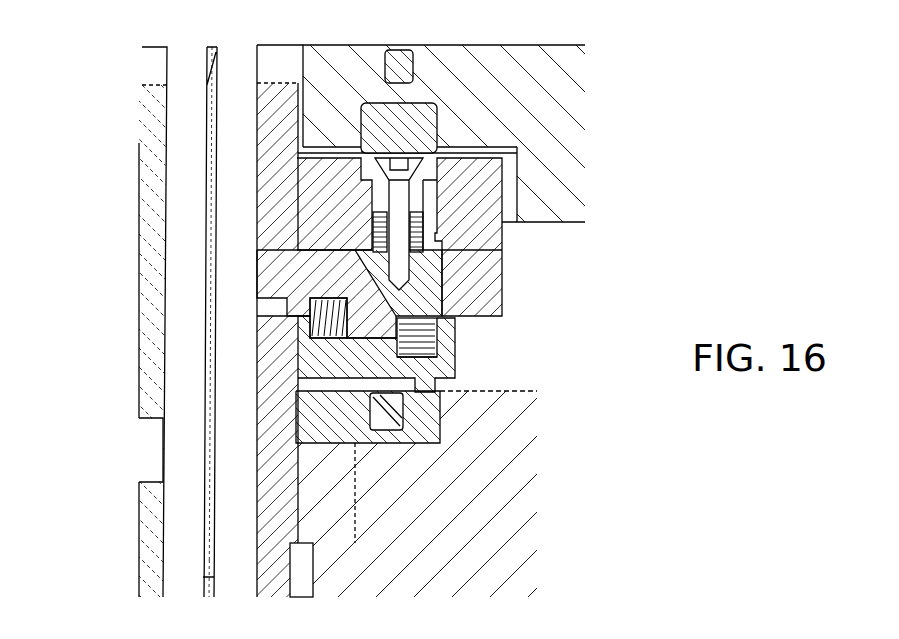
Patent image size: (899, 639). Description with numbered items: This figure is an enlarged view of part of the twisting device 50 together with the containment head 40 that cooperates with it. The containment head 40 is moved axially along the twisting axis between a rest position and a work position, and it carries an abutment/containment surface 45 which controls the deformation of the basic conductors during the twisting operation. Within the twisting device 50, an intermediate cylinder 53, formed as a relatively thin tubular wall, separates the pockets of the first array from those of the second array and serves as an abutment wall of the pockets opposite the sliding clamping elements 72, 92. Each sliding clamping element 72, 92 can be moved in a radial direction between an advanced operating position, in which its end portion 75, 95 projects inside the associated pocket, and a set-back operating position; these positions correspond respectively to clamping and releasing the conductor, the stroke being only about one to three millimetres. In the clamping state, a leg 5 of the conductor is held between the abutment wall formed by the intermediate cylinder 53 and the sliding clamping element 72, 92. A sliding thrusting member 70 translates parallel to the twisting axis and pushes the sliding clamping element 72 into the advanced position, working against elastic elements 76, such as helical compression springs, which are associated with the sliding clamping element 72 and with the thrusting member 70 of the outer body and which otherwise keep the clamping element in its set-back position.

The leg of the conductor 5 is at (185, 103).
The containment head 40 is at (592, 63).
The abutment/containment surface 45 is at (385, 110).
The twisting device 50 is at (547, 458).
The intermediate cylinder 53 is at (203, 577).
The sliding thrusting member 70 is at (437, 170).
The sliding clamping element 72 is at (288, 262).
The end portion 75 is at (260, 273).
The elastic elements 76 is at (310, 325).
The sliding clamping element 92 is at (150, 453).
The end portion 95 is at (160, 467).